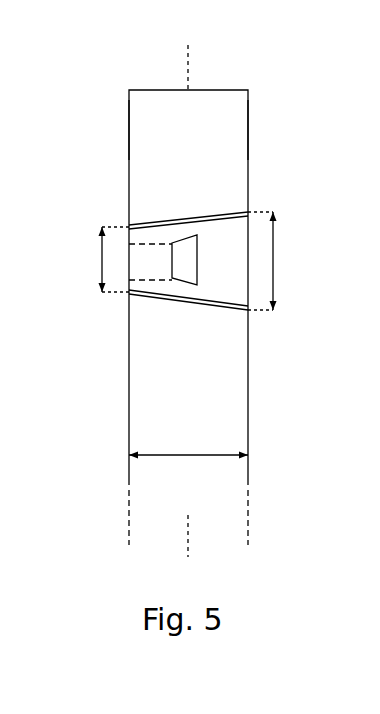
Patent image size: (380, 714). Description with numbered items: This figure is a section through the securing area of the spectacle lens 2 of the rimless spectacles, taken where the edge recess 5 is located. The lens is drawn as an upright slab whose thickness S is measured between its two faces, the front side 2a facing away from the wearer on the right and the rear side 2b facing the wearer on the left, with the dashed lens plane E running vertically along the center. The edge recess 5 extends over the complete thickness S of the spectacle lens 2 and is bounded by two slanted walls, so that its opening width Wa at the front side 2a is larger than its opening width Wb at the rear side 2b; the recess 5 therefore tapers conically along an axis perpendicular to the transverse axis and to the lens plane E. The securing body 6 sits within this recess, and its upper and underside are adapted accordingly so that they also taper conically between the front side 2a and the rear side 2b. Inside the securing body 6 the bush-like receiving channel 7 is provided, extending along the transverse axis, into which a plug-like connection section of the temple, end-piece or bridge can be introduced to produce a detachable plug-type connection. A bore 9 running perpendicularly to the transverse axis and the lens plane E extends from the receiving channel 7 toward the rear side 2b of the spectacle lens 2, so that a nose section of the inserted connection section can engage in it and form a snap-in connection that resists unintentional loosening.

The spectacle lens 2 is at (157, 90).
The front side 2a is at (258, 128).
The rear side 2b is at (107, 128).
The edge recess 5 is at (183, 347).
The securing body 6 is at (232, 233).
The bush-like receiving channel 7 is at (178, 250).
The bore 9 is at (145, 268).
The lens plane E is at (187, 289).
The opening width on the front side Wa is at (280, 261).
The opening width on the rear side Wb is at (92, 259).
The thickness S is at (188, 470).